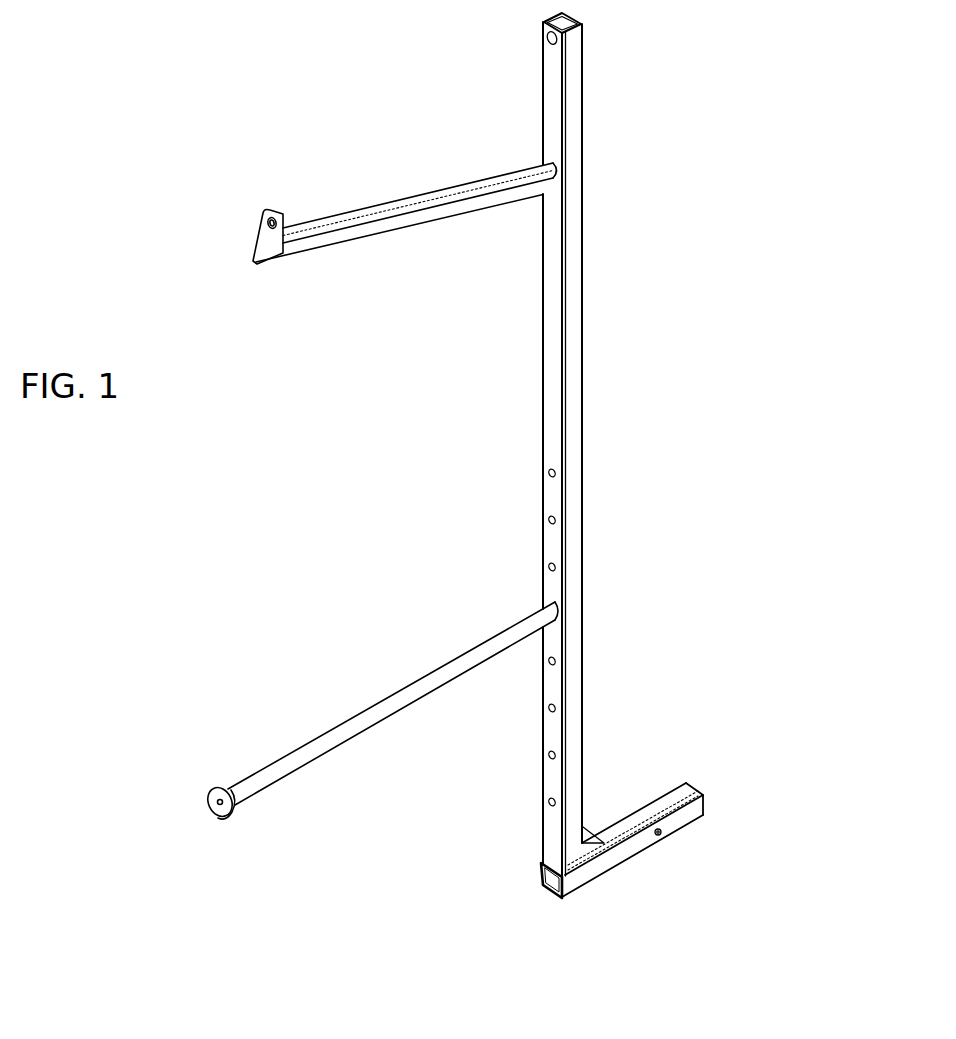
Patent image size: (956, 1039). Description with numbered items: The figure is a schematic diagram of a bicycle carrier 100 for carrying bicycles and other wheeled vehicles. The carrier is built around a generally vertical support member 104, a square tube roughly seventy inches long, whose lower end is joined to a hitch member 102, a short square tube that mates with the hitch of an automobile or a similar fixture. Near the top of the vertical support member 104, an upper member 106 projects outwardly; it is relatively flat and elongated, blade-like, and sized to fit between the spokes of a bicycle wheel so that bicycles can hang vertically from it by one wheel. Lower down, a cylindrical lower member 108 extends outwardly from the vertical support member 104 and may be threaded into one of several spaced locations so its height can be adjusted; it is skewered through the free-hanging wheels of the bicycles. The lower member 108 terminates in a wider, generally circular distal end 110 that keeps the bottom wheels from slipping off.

The bicycle carrier 100 is at (213, 94).
The hitch member 102 is at (706, 806).
The vertical support member 104 is at (583, 440).
The upper member 106 is at (422, 217).
The lower member 108 is at (412, 683).
The distal end 110 is at (213, 788).